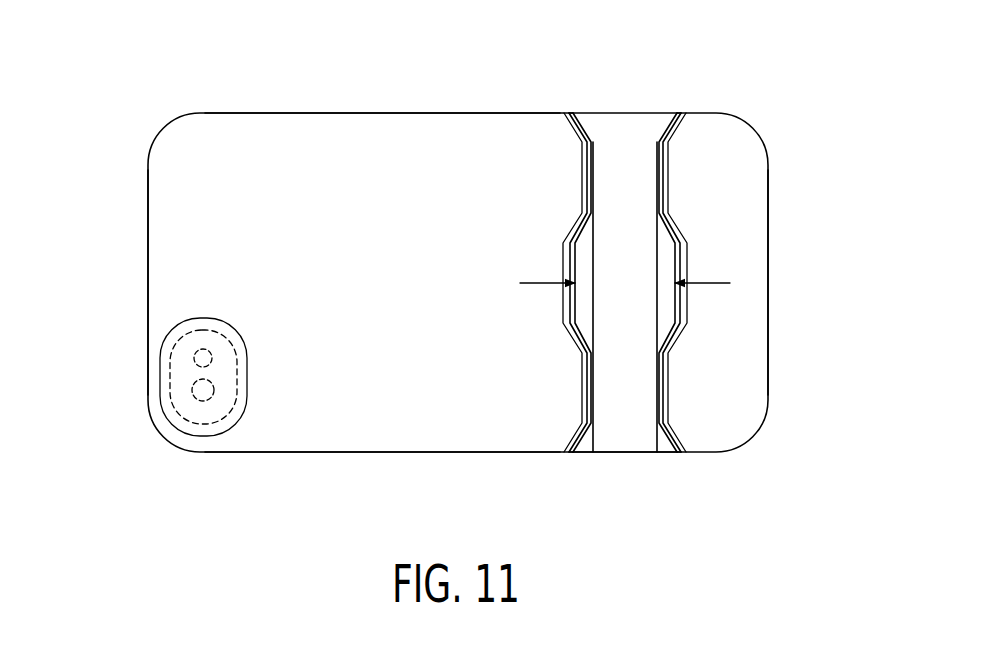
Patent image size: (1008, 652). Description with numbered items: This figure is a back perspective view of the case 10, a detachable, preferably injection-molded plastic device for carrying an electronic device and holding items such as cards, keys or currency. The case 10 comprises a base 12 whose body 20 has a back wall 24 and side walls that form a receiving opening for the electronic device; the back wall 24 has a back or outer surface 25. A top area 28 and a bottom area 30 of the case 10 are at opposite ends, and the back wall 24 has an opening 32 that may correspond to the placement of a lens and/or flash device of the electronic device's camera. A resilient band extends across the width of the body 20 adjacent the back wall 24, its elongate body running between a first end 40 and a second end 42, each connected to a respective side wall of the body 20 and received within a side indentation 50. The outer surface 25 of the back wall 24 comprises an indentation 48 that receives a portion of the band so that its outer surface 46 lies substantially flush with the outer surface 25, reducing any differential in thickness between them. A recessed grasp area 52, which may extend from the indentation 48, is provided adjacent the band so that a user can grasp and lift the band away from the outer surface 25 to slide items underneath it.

The case 10 is at (461, 273).
The base 12 is at (236, 113).
The body 20 is at (245, 452).
The back wall 24 is at (352, 162).
The outer surface 25 is at (360, 291).
The top area 28 is at (147, 224).
The bottom area 30 is at (770, 340).
The opening 32 is at (153, 394).
The first end 40 is at (634, 108).
The second end 42 is at (617, 460).
The outer surface 46 is at (617, 378).
The indentation 48 is at (568, 315).
The side indentation 50 is at (684, 113).
The recessed grasp area 52 is at (580, 256).